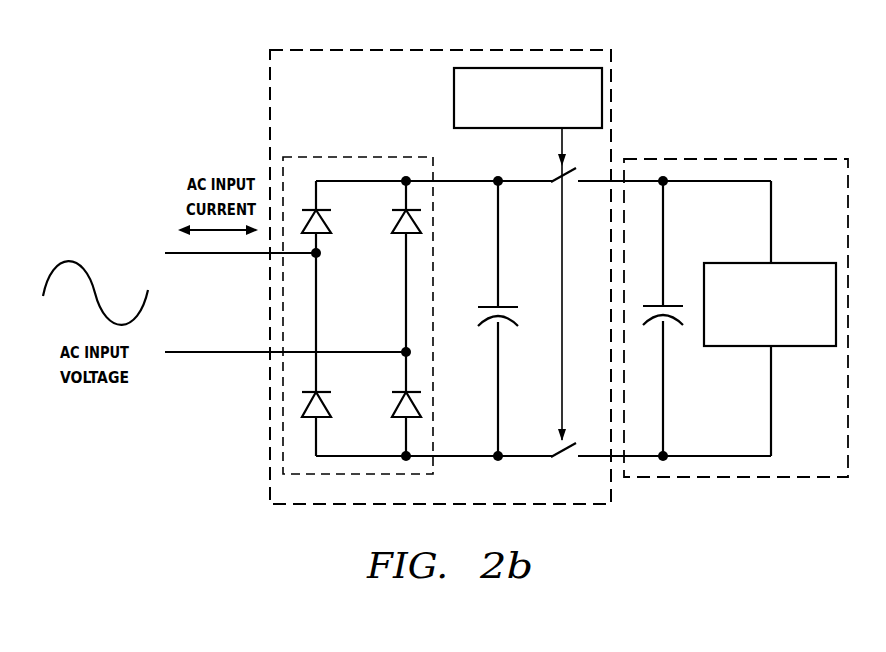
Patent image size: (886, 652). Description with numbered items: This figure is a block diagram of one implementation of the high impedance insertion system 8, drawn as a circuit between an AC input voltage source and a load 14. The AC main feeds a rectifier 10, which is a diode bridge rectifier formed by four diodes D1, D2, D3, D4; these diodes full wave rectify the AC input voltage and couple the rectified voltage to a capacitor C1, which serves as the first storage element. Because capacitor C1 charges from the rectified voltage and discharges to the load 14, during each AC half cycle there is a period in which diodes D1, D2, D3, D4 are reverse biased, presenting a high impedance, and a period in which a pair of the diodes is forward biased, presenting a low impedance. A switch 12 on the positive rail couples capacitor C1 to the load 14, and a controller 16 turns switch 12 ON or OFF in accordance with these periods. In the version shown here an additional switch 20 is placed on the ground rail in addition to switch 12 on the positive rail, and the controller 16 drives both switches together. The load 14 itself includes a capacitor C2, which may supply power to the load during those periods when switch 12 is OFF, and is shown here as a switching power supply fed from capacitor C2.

The high impedance insertion system 8 is at (550, 50).
The rectifier 10 is at (390, 281).
The switch 12 is at (553, 185).
The load 14 is at (736, 283).
The controller 16 is at (498, 67).
The additional switch 20 is at (553, 452).
The diode D1 is at (311, 211).
The diode D2 is at (401, 211).
The diode D3 is at (311, 395).
The diode D4 is at (401, 395).
The capacitor C1 is at (499, 318).
The capacitor C2 is at (664, 318).